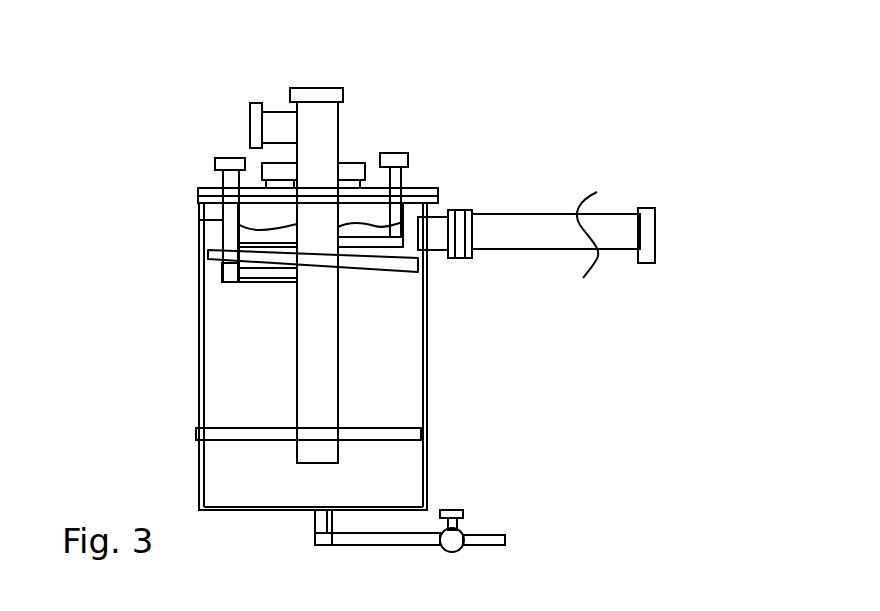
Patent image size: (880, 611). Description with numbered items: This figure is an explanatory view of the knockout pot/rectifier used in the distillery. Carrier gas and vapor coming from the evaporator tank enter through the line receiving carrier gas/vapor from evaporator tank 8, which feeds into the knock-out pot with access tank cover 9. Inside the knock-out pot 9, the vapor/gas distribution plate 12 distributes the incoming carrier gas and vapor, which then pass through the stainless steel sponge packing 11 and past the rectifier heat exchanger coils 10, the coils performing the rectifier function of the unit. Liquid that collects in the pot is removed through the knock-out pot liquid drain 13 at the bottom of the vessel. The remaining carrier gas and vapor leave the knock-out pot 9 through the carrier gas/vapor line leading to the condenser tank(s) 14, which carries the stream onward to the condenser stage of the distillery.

The line receiving carrier gas/vapor from evaporator tank 8 is at (278, 110).
The knock-out pot with access tank cover 9 is at (365, 165).
The rectifier heat exchanger coils 10 is at (207, 163).
The stainless steel sponge packing 11 is at (235, 327).
The vapor/gas distribution plate 12 is at (360, 423).
The knock-out pot liquid drain 13 is at (490, 527).
The carrier gas/vapor line leading to the condenser tank(s) 14 is at (617, 210).